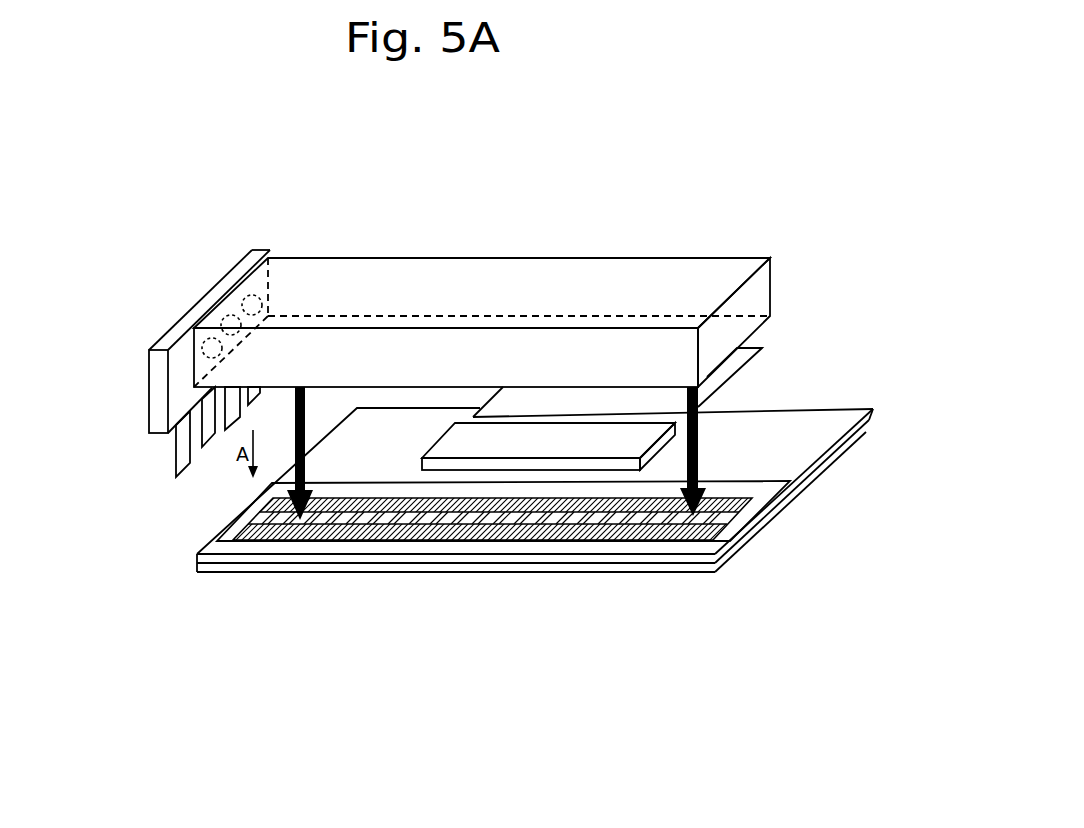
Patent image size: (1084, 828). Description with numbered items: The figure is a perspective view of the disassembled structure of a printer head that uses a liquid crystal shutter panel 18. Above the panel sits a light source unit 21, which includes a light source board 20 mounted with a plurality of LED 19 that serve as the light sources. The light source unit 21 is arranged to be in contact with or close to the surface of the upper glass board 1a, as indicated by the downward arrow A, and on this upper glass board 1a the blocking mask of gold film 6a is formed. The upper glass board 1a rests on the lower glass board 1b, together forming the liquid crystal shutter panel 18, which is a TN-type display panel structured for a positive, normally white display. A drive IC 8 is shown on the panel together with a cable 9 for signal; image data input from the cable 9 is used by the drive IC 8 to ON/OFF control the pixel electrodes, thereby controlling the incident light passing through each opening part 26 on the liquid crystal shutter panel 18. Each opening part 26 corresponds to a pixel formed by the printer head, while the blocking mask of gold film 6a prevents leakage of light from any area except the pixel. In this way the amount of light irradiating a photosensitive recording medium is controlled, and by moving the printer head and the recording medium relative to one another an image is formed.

The light source board 20 is at (165, 325).
The LED 19 is at (268, 303).
The light source unit 21 is at (600, 258).
The cable 9 is at (730, 373).
The drive IC 8 is at (677, 432).
The opening part 26 is at (395, 491).
The upper glass board 1a is at (232, 538).
The lower glass board 1b is at (823, 466).
The liquid crystal shutter panel 18 is at (491, 568).
The blocking mask of gold film 6a is at (718, 540).